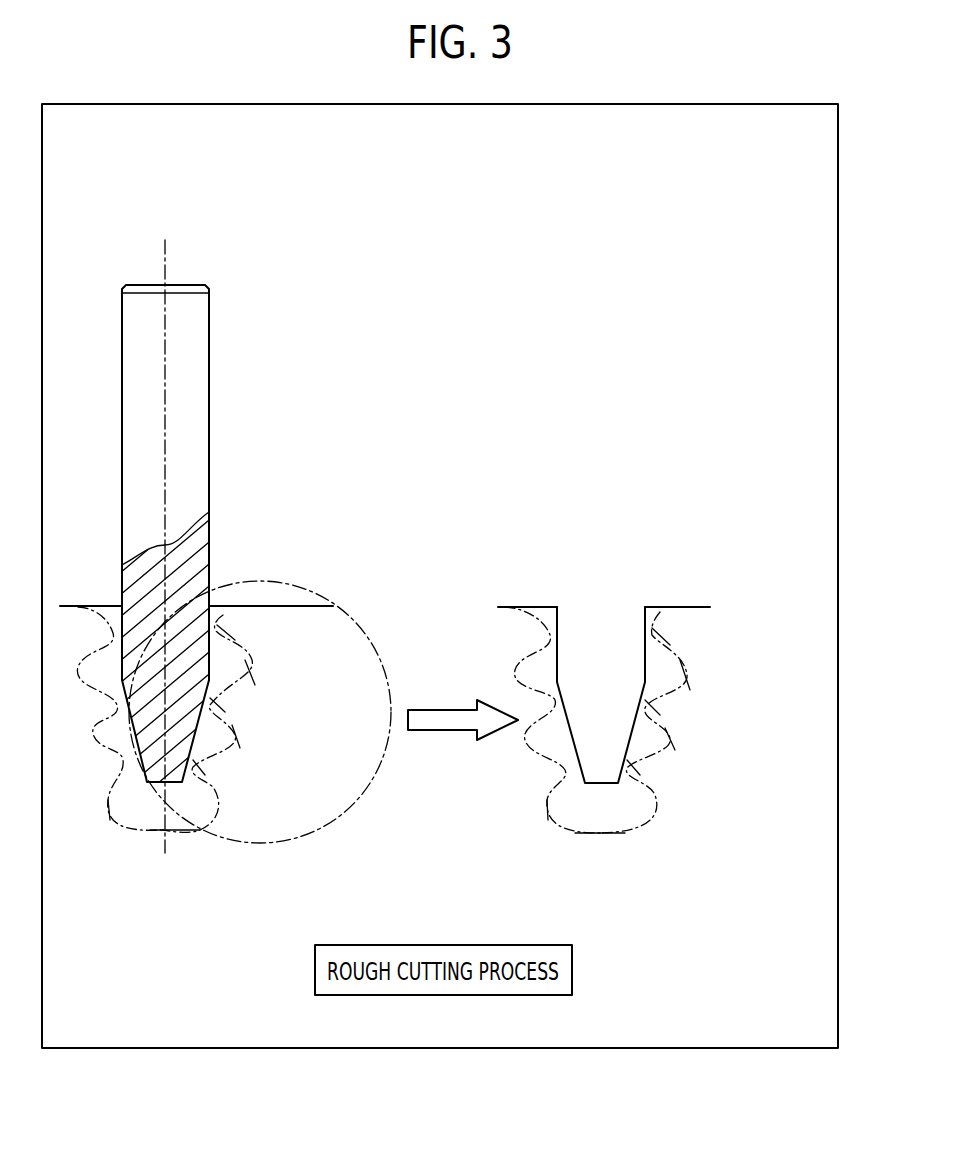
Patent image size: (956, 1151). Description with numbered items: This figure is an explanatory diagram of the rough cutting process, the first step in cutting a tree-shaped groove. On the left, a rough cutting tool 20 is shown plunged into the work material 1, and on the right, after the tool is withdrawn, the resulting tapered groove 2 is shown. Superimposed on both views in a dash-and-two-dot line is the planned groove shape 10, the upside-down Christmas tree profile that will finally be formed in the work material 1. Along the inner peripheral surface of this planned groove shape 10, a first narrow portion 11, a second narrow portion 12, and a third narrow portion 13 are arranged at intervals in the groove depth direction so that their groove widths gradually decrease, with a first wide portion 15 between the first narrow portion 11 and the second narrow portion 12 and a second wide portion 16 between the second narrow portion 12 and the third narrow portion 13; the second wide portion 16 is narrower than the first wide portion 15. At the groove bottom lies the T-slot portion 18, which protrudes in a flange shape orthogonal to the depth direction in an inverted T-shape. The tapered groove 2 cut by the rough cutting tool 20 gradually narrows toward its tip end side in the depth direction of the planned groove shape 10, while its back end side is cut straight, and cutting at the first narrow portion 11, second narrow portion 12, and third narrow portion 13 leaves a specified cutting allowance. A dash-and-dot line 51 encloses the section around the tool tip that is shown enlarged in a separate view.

The rough cutting tool 20 is at (201, 262).
The work material 1 is at (250, 606).
The tapered groove 2 is at (598, 618).
The first narrow portion 11 is at (217, 632).
The first wide portion 15 is at (252, 673).
The second narrow portion 12 is at (210, 705).
The second wide portion 16 is at (235, 735).
The third narrow portion 13 is at (193, 767).
The planned groove shape 10 is at (110, 823).
The T-slot portion 18 is at (180, 832).
The dash-and-dot line 51 is at (297, 840).